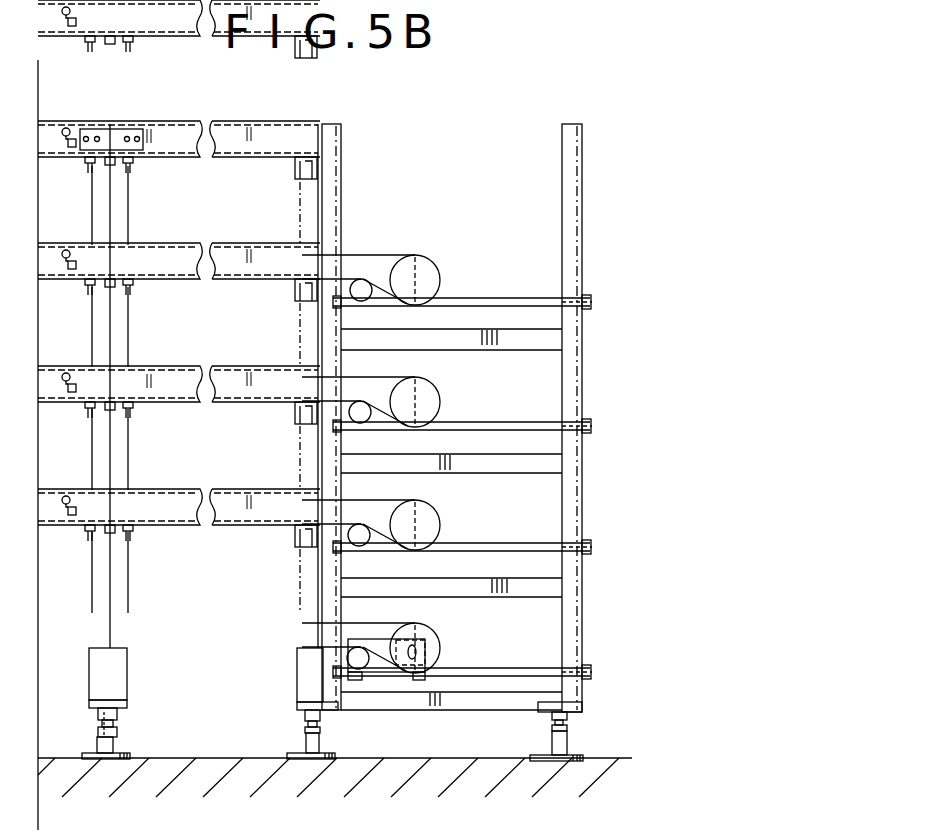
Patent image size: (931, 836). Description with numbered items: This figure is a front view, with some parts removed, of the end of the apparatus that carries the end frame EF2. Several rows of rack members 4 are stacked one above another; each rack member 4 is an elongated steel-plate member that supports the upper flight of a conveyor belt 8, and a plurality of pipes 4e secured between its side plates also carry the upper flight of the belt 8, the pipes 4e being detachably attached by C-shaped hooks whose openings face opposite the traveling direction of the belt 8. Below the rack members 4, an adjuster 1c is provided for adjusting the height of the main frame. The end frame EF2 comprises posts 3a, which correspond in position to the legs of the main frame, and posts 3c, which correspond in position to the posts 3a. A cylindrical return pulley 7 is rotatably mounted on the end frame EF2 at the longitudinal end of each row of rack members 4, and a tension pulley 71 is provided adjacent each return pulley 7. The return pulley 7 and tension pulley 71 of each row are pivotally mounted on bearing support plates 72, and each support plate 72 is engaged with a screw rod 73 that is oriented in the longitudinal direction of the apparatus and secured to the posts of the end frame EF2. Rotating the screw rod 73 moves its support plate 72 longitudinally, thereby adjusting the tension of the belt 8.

The rack member 4 is at (171, 637).
The pipe 4e is at (64, 641).
The adjuster 1c is at (112, 740).
The post 3a is at (327, 697).
The post 3c is at (565, 518).
The end frame EF2 is at (552, 258).
The screw rod 73 is at (532, 667).
The conveyor belt 8 is at (399, 638).
The return pulley 7 is at (432, 642).
The tension pulley 71 is at (359, 649).
The bearing support plate 72 is at (378, 668).